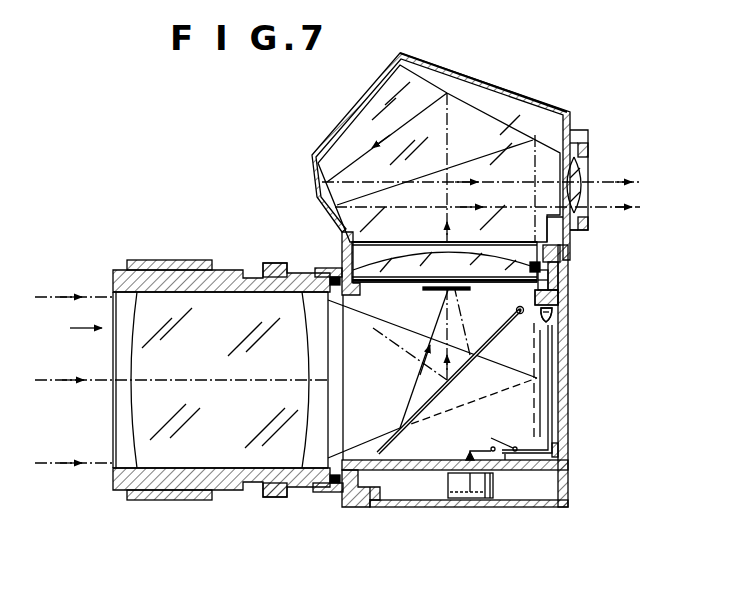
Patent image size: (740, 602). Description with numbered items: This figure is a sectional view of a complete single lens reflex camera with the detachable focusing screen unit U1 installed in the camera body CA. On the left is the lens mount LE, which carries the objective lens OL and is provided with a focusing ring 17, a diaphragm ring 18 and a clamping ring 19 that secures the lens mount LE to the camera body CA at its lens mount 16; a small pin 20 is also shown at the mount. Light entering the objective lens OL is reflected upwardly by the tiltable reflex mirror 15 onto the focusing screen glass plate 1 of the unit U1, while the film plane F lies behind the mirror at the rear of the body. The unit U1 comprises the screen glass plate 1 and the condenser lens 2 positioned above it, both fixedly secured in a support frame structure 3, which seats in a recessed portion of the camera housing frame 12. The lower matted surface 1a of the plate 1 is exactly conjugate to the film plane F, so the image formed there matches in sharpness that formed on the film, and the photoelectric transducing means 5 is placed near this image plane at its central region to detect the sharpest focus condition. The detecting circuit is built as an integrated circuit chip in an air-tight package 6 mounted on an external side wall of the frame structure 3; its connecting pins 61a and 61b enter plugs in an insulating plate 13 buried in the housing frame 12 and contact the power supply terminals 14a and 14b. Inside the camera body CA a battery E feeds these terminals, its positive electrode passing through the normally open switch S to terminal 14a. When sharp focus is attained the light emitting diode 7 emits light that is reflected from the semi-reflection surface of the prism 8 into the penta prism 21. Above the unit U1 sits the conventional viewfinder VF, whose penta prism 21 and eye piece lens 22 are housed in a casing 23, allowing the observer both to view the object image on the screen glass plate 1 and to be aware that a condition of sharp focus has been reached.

The lens mount LE is at (160, 254).
The objective lens OL is at (232, 302).
The diaphragm ring 18 is at (172, 500).
The clamping ring 19 is at (278, 498).
The mount pin 20 is at (324, 494).
The focusing ring 17 is at (350, 497).
The support frame structure 3 is at (340, 266).
The camera body CA is at (573, 472).
The reflex mirror 15 is at (468, 356).
The insulating plate 13 is at (517, 309).
The focusing screen glass plate 1 is at (404, 285).
The matted surface 1a is at (418, 294).
The condenser lens 2 is at (393, 274).
The focusing screen unit U1 is at (370, 298).
The photoelectric transducing means 5 is at (452, 292).
The prism 8 is at (531, 263).
The film plane F is at (539, 399).
The lens mount 16 is at (553, 418).
The power supply terminal 14a is at (562, 308).
The power supply terminal 14b is at (546, 315).
The connecting pin 61a is at (566, 297).
The connecting pin 61b is at (546, 297).
The light emitting diode 7 is at (569, 262).
The air-tight package 6 is at (568, 284).
The camera housing frame 12 is at (568, 271).
The switch S is at (511, 447).
The battery E is at (459, 493).
The viewfinder VF is at (533, 95).
The casing 23 is at (489, 89).
The penta prism 21 is at (360, 136).
The eye piece lens 22 is at (590, 165).